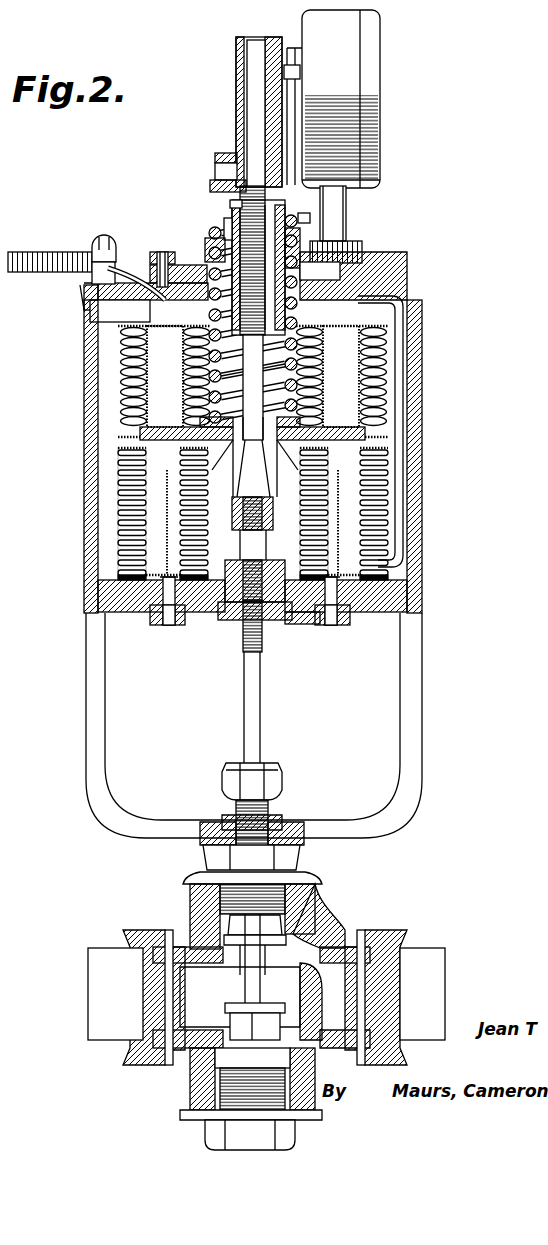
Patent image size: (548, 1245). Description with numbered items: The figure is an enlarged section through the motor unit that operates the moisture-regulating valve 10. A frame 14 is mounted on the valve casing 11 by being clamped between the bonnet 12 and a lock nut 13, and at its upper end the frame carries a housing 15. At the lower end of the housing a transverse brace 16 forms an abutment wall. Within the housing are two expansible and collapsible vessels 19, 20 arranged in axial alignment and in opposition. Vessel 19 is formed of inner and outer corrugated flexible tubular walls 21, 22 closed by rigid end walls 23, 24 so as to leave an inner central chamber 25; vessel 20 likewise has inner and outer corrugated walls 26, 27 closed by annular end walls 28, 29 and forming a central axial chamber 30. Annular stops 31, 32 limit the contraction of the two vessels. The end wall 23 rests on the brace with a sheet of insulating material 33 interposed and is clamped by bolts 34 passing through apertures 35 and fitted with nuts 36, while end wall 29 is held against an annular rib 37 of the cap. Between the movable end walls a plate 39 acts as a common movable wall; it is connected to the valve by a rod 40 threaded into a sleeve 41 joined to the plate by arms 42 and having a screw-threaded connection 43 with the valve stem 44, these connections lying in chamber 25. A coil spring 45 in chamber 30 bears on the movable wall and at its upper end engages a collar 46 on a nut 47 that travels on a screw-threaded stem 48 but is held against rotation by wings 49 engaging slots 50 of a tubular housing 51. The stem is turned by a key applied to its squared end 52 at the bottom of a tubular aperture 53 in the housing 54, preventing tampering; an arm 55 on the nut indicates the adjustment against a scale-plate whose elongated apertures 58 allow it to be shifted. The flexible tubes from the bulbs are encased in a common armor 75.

The valve 10 is at (290, 1010).
The valve casing 11 is at (337, 935).
The bonnet 12 is at (322, 880).
The lock nut 13 is at (272, 803).
The frame 14 is at (88, 720).
The housing 15 is at (424, 420).
The transverse brace 16 is at (302, 600).
The expansible and collapsible vessel 19 is at (328, 510).
The expansible and collapsible vessel 20 is at (388, 347).
The inner corrugated flexible tubular wall 21 is at (135, 540).
The outer corrugated flexible tubular wall 22 is at (135, 515).
The end wall 23 is at (130, 574).
The end wall 24 is at (117, 448).
The inner central chamber 25 is at (372, 463).
The inner corrugated flexible tubular wall 26 is at (120, 385).
The outer corrugated flexible tubular wall 27 is at (120, 362).
The annular end wall 28 is at (120, 432).
The annular end wall 29 is at (120, 328).
The central axial chamber 30 is at (385, 366).
The annular stop 31 is at (372, 527).
The annular stop 32 is at (372, 385).
The sheet of insulating material 33 is at (340, 612).
The bolts 34 is at (170, 620).
The apertures 35 is at (90, 598).
The nuts 36 is at (155, 622).
The annular rib 37 is at (425, 298).
The common movable wall 39 is at (365, 440).
The rod 40 is at (340, 548).
The sleeve 41 is at (352, 490).
The arms 42 is at (135, 488).
The screw-threaded connection 43 is at (243, 640).
The valve stem 44 is at (254, 710).
The coil spring 45 is at (212, 258).
The collar 46 is at (228, 228).
The nut 47 is at (295, 240).
The screw-threaded stem 48 is at (348, 278).
The wings 49 is at (233, 207).
The slots 50 is at (345, 250).
The tubular housing 51 is at (402, 322).
The squared end 52 is at (246, 165).
The tubular aperture 53 is at (255, 95).
The housing 54 is at (237, 56).
The arm 55 is at (298, 98).
The elongated apertures 58 is at (163, 252).
The armor 75 is at (38, 258).